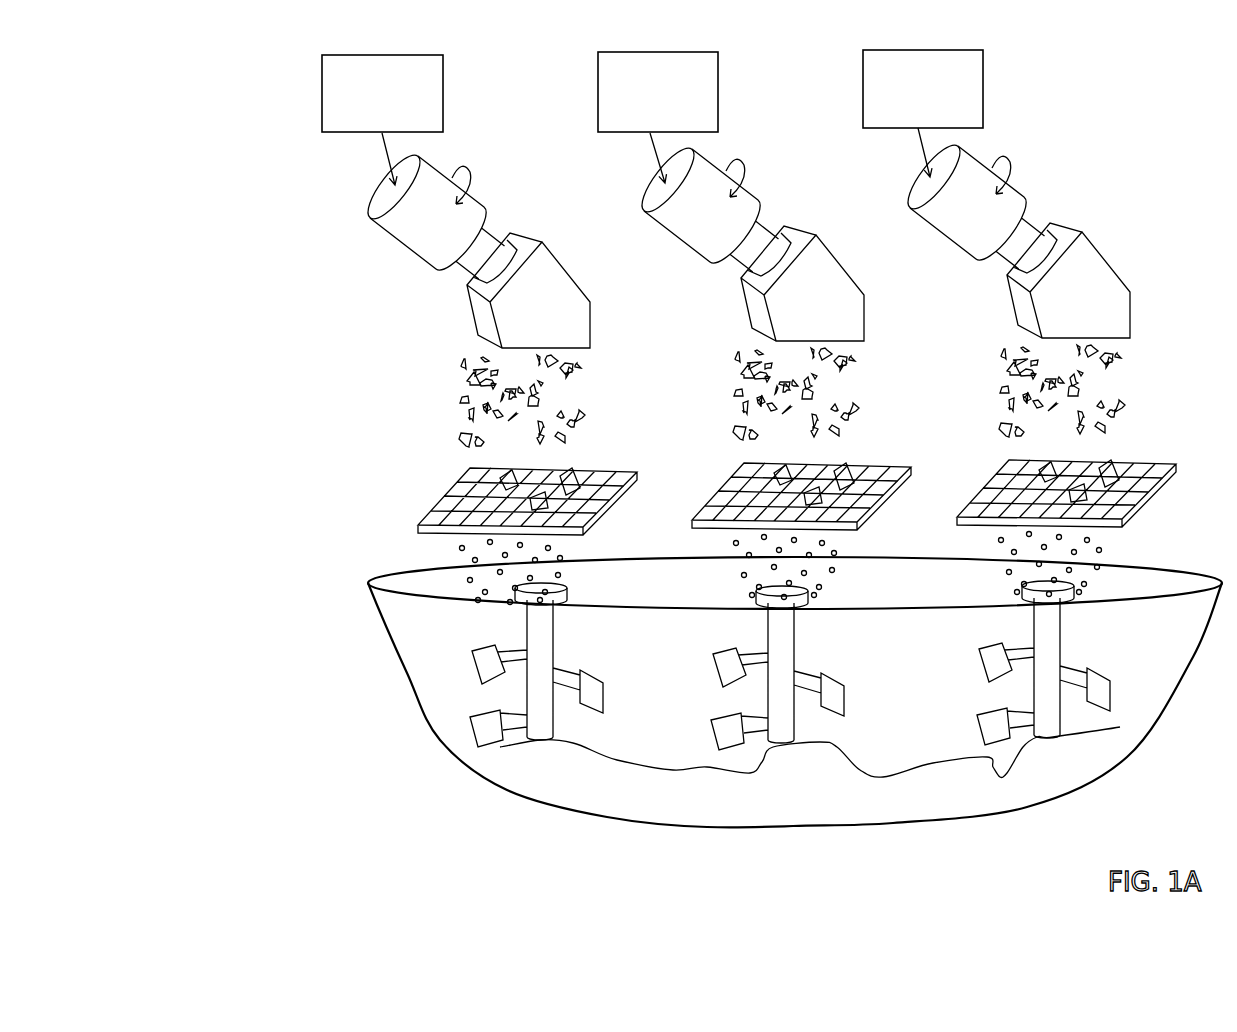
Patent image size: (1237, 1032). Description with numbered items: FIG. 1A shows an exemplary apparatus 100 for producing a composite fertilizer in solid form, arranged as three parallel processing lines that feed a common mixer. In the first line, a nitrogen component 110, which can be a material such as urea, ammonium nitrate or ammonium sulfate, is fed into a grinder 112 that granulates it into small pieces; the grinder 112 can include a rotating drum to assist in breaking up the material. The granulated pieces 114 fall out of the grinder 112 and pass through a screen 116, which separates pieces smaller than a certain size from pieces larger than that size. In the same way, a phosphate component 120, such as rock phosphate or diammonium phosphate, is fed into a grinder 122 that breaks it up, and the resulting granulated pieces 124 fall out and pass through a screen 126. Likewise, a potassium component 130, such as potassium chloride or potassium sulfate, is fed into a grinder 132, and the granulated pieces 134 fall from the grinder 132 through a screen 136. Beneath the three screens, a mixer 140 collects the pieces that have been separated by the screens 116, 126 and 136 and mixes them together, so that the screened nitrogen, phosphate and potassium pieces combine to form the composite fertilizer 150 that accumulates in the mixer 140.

The apparatus 100 is at (250, 83).
The nitrogen component 110 is at (382, 120).
The phosphate component 120 is at (658, 117).
The potassium component 130 is at (923, 113).
The grinder 112 is at (475, 248).
The grinder 122 is at (749, 241).
The grinder 132 is at (1015, 238).
The granulated pieces 114 is at (488, 401).
The granulated pieces 124 is at (766, 394).
The granulated pieces 134 is at (1031, 391).
The screen 116 is at (496, 536).
The screen 126 is at (783, 530).
The screen 136 is at (1089, 528).
The mixer 140 is at (787, 692).
The composite fertilizer 150 is at (810, 769).